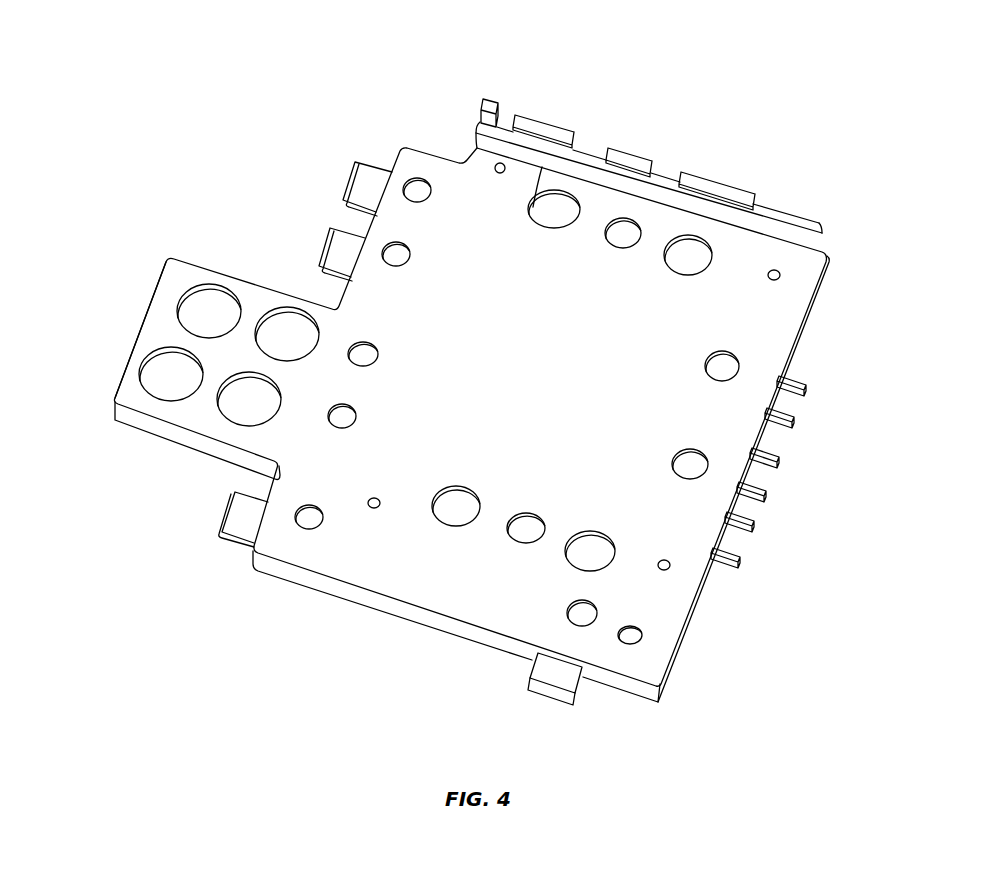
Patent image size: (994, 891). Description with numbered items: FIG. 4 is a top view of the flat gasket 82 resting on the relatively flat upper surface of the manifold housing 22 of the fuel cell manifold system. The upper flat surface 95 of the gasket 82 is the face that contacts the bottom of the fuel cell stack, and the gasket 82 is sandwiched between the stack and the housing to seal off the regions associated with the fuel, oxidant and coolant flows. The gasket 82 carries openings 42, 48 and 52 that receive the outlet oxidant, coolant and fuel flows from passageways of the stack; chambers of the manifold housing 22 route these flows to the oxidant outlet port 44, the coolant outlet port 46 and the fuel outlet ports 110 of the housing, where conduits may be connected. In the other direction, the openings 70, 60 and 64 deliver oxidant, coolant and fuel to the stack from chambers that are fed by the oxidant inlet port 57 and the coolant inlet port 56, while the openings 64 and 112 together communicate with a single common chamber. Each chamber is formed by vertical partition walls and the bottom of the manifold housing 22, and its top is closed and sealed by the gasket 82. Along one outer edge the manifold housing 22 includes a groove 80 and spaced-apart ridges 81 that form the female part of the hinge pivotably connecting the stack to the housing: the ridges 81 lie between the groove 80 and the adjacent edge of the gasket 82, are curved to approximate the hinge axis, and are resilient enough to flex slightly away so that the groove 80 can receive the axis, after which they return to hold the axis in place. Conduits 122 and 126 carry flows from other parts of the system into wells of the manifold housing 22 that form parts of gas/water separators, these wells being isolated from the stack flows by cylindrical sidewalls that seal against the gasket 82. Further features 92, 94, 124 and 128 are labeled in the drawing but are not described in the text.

The manifold housing 22 is at (348, 593).
The oxidant outlet opening 42 is at (513, 167).
The oxidant outlet port 44 is at (347, 183).
The coolant outlet port 46 is at (322, 247).
The coolant outlet opening 48 is at (622, 222).
The fuel outlet opening 52 is at (681, 243).
The coolant inlet port 56 is at (222, 535).
The oxidant inlet port 57 is at (550, 698).
The coolant inlet opening 60 is at (520, 543).
The fuel inlet opening 64 is at (455, 525).
The oxidant inlet opening 70 is at (582, 571).
The groove 80 is at (477, 130).
The ridges 81 is at (487, 106).
The gasket 82 is at (127, 370).
The aperture 92 is at (738, 363).
The aperture 94 is at (690, 478).
The upper flat surface 95 is at (551, 393).
The fuel outlet ports 110 is at (257, 332).
The openings 112 is at (242, 424).
The conduit 122 is at (805, 390).
The projection 124 is at (780, 467).
The conduit 126 is at (753, 530).
The projection 128 is at (740, 563).